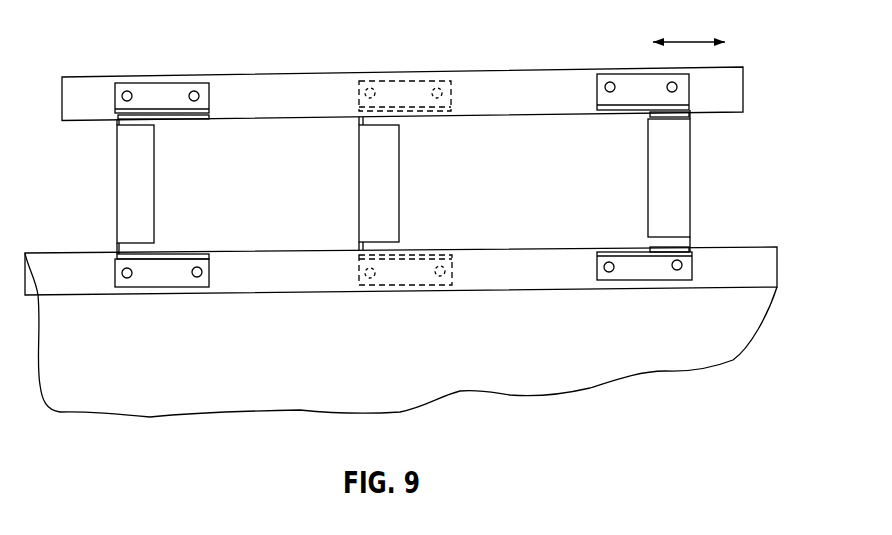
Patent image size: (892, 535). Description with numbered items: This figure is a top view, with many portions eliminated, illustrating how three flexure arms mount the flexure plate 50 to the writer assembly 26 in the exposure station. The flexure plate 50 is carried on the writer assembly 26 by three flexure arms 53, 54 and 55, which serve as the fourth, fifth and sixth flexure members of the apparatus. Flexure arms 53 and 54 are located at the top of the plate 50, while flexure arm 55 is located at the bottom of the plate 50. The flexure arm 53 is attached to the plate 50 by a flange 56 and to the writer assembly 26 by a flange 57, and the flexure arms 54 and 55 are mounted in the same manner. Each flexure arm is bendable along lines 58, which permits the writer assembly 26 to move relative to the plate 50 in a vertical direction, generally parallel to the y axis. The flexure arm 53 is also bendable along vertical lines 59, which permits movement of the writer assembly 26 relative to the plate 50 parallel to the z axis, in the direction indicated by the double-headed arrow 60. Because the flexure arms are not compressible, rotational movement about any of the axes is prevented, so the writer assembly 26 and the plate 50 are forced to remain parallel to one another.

The writer assembly 26 is at (85, 270).
The flexure plate 50 is at (297, 90).
The flexure arm 53 is at (147, 197).
The flexure arm 54 is at (664, 133).
The flexure arm 55 is at (385, 140).
The flange 56 is at (170, 90).
The flange 57 is at (168, 280).
The bend lines 58 is at (189, 117).
The vertical bend lines 59 is at (700, 114).
The arrow 60 is at (683, 42).